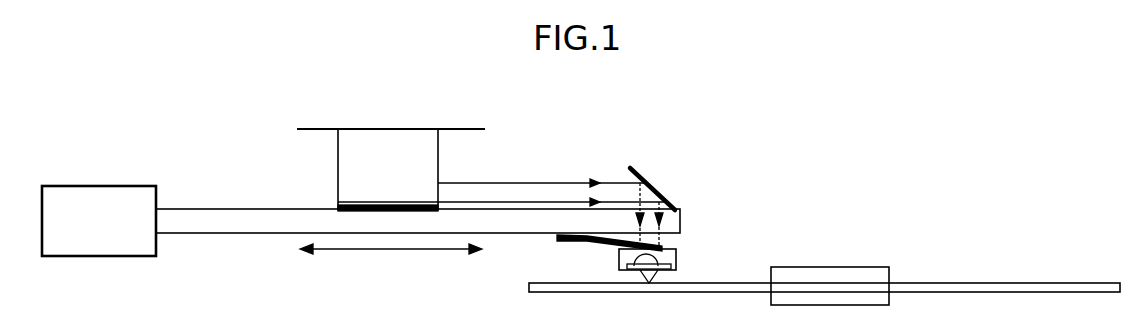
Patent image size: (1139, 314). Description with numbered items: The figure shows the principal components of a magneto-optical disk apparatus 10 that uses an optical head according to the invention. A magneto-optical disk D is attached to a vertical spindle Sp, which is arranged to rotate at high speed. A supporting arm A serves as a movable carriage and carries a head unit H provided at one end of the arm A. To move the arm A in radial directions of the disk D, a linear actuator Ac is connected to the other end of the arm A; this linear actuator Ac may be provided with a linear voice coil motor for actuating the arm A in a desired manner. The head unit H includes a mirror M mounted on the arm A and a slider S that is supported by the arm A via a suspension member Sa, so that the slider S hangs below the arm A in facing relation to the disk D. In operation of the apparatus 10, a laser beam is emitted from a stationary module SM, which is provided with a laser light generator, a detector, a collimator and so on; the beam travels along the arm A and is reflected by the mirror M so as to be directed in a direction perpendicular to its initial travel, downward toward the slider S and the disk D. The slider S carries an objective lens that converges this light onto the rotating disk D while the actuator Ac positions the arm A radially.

The linear actuator Ac is at (100, 186).
The supporting arm A is at (258, 235).
The stationary module SM is at (400, 143).
The mirror M is at (642, 176).
The head unit H is at (688, 198).
The suspension member Sa is at (586, 242).
The slider S is at (672, 257).
The magneto-optical disk D is at (1037, 283).
The vertical spindle Sp is at (837, 267).
The magneto-optical disk apparatus 10 is at (942, 203).